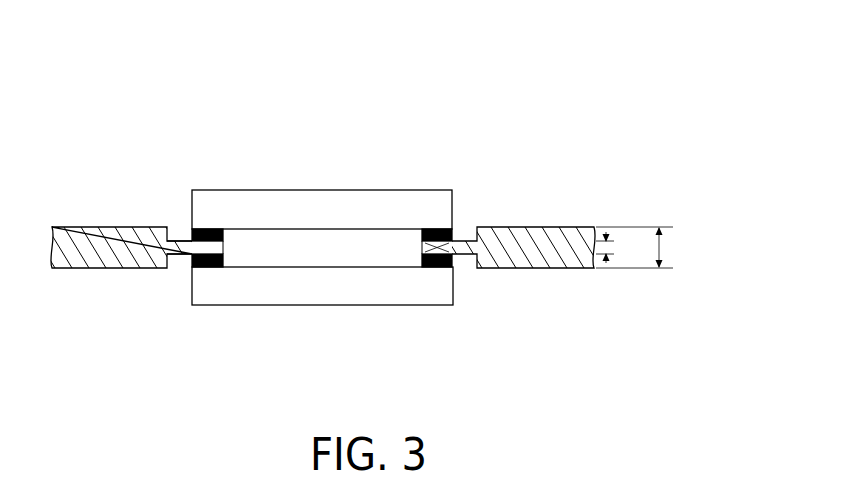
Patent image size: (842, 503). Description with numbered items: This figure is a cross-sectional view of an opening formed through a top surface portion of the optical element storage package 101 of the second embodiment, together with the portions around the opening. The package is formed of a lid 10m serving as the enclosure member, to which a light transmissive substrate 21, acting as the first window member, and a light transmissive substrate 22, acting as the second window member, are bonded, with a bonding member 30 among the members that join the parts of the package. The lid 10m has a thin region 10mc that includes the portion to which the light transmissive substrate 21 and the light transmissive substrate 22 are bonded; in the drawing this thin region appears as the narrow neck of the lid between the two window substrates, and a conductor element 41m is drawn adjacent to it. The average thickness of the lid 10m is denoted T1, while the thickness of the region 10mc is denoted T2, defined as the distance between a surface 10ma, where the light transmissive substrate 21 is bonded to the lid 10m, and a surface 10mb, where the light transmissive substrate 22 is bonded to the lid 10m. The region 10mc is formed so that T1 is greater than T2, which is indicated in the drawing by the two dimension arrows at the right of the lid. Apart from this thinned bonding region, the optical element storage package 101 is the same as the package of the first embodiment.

The optical element storage package 101 is at (656, 58).
The light transmissive substrate 21 is at (305, 207).
The light transmissive substrate 22 is at (357, 288).
The lid 10m is at (102, 242).
The surface 10ma is at (178, 238).
The surface 10mb is at (180, 256).
The thin region 10mc is at (203, 240).
The bonding member 30 is at (453, 232).
The conductor pattern 41m is at (418, 247).
The average thickness of the lid T1 is at (643, 247).
The thickness of the thin region T2 is at (618, 247).